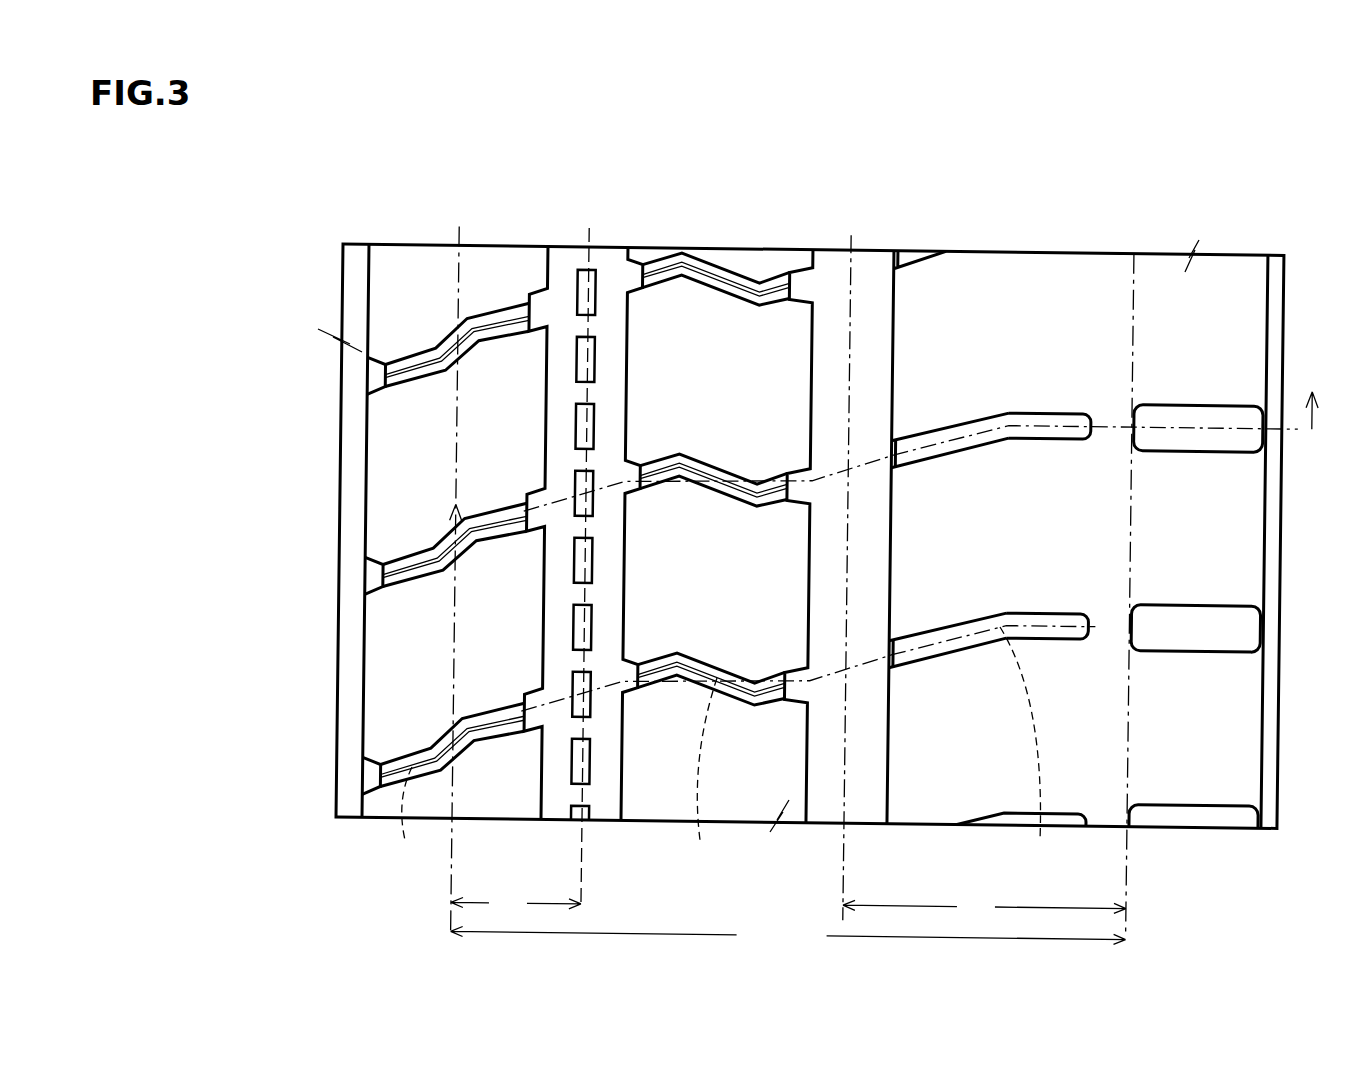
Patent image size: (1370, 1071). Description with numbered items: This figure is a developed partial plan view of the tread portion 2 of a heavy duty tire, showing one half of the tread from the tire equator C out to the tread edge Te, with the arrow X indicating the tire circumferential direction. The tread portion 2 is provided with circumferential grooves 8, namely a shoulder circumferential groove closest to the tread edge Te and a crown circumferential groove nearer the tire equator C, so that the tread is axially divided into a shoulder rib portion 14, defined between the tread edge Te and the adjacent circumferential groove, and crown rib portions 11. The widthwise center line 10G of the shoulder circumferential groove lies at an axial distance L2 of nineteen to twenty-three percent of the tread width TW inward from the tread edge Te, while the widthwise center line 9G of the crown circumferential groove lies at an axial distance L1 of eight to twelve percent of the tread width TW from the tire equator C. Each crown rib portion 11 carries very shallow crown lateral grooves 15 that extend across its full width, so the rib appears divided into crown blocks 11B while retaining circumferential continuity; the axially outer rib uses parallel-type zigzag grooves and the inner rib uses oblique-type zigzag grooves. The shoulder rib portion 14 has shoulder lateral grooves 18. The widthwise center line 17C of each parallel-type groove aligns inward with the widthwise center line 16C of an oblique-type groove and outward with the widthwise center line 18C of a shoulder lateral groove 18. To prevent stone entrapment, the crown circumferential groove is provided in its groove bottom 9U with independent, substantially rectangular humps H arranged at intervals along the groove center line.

The tread portion 2 is at (403, 255).
The crown rib portion 11 is at (515, 230).
The crown block 11B is at (673, 358).
The crown lateral groove 15 is at (752, 290).
The groove bottom 9U is at (558, 673).
The widthwise center line of crown circumferential groove 9G is at (590, 260).
The hump H is at (578, 298).
The circumferential groove 8 is at (839, 232).
The widthwise center line of shoulder circumferential groove 10G is at (853, 280).
The shoulder rib portion 14 is at (1029, 240).
The shoulder lateral groove 18 is at (1040, 622).
The widthwise center line of oblique-type zigzag groove 16C is at (413, 819).
The widthwise center line of parallel-type zigzag groove 17C is at (710, 775).
The widthwise center line of shoulder lateral groove 18C is at (1033, 754).
The tire equator C is at (456, 567).
The tread edge Te is at (1136, 575).
The circumferential direction X is at (874, 439).
The axial distance L1 is at (516, 904).
The axial distance L2 is at (984, 910).
The tread width TW is at (788, 937).